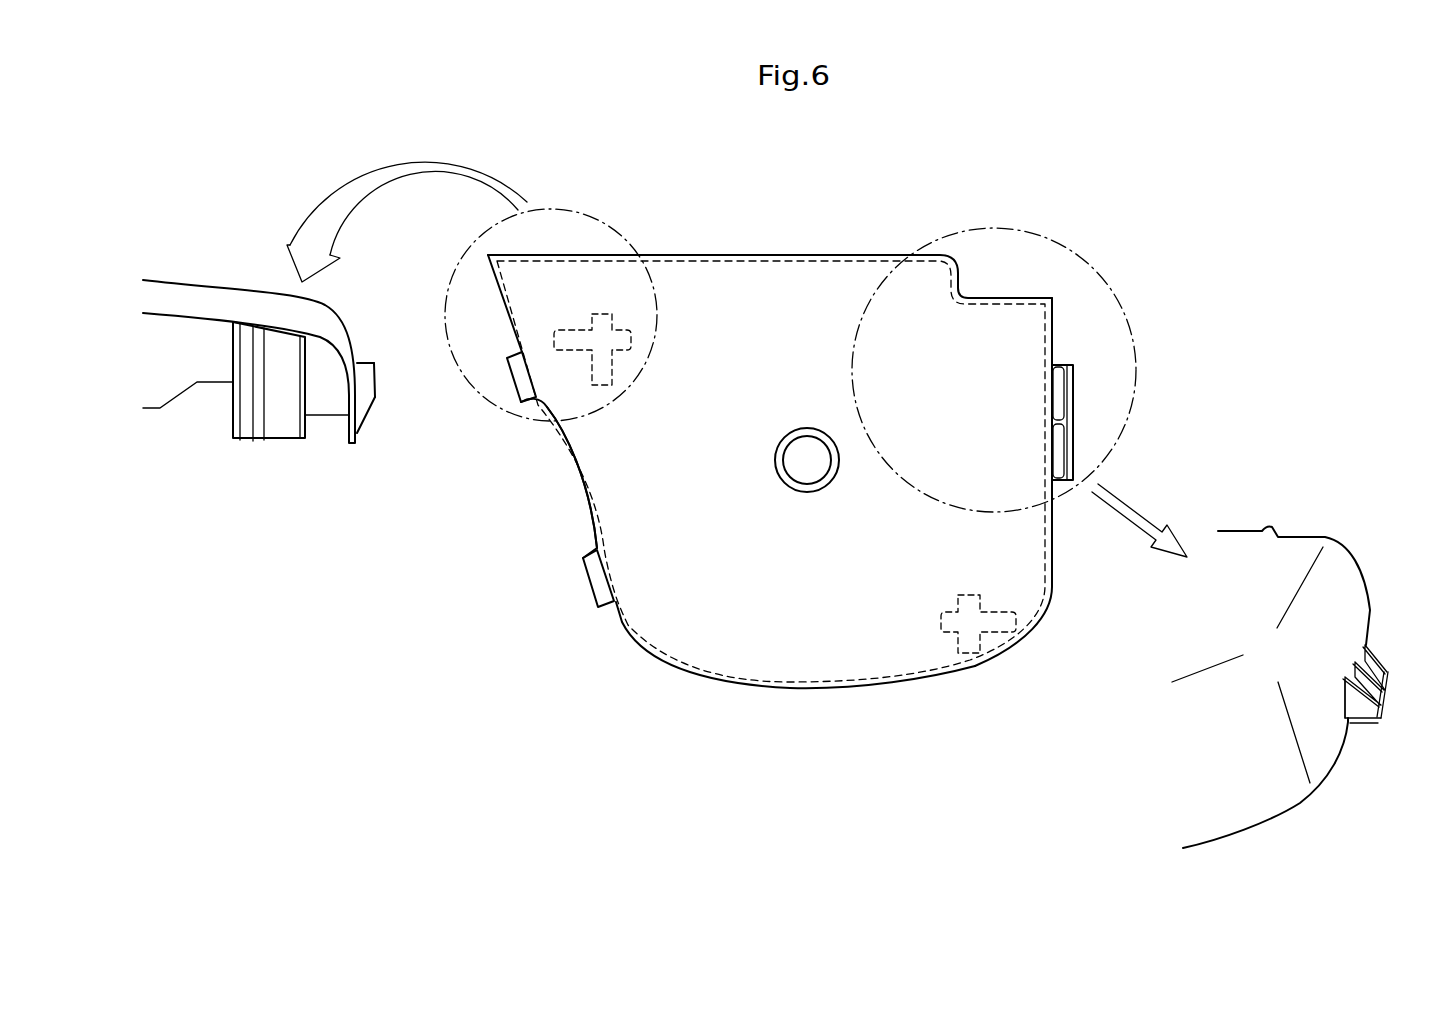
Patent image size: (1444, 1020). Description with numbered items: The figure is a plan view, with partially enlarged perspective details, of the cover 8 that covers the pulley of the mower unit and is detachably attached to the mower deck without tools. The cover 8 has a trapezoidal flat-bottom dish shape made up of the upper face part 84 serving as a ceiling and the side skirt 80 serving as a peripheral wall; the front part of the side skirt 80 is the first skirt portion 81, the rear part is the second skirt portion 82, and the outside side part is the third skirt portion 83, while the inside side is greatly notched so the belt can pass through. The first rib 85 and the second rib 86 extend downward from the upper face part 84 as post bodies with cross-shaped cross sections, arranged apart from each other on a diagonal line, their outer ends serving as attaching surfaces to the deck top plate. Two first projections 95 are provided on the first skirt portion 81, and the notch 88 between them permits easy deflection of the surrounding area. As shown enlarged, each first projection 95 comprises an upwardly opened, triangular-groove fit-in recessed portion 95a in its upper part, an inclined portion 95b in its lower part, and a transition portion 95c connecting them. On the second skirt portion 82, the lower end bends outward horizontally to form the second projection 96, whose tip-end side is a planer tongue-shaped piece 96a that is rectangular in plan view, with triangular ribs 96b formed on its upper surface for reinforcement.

The cover 8 is at (822, 242).
The side skirt 80 is at (788, 528).
The first skirt portion 81 is at (357, 350).
The second skirt portion 82 is at (1054, 540).
The third skirt portion 83 is at (812, 690).
The upper face part 84 is at (715, 283).
The first rib 85 is at (605, 314).
The second rib 86 is at (945, 614).
The notch 88 is at (578, 470).
The first projection 95 is at (530, 392).
The fit-in recessed portion 95a is at (365, 362).
The inclined portion 95b is at (365, 425).
The transition portion 95c is at (380, 383).
The second projection 96 is at (1073, 405).
The planer tongue-shaped piece 96a is at (1388, 671).
The triangular ribs 96b is at (1352, 703).